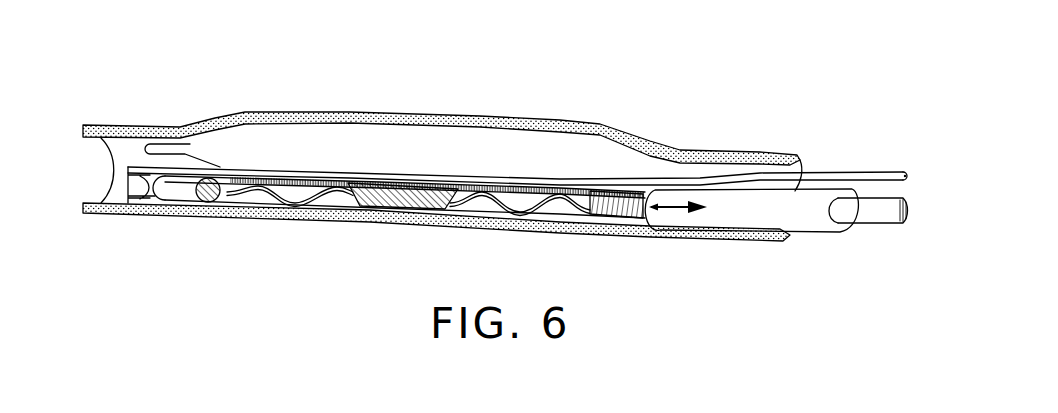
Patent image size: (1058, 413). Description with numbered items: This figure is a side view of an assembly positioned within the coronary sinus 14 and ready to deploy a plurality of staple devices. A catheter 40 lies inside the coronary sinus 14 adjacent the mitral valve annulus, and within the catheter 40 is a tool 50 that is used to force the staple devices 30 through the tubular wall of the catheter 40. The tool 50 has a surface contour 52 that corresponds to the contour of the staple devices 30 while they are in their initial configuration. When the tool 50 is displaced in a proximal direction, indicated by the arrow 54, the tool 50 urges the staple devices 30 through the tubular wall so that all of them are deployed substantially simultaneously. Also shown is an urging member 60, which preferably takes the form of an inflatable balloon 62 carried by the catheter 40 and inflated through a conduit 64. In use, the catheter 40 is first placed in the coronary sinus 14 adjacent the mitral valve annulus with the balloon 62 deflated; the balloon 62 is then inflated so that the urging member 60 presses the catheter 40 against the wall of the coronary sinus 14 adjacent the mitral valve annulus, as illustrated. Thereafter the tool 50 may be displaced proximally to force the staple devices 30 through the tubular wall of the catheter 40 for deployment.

The coronary sinus 14 is at (328, 114).
The inflatable balloon 62 is at (450, 143).
The catheter 40 is at (178, 160).
The urging member 60 is at (159, 162).
The conduit 64 is at (838, 171).
The tool 50 is at (400, 204).
The staple devices 30 is at (320, 203).
The surface contour 52 is at (231, 189).
The arrow 54 is at (675, 216).